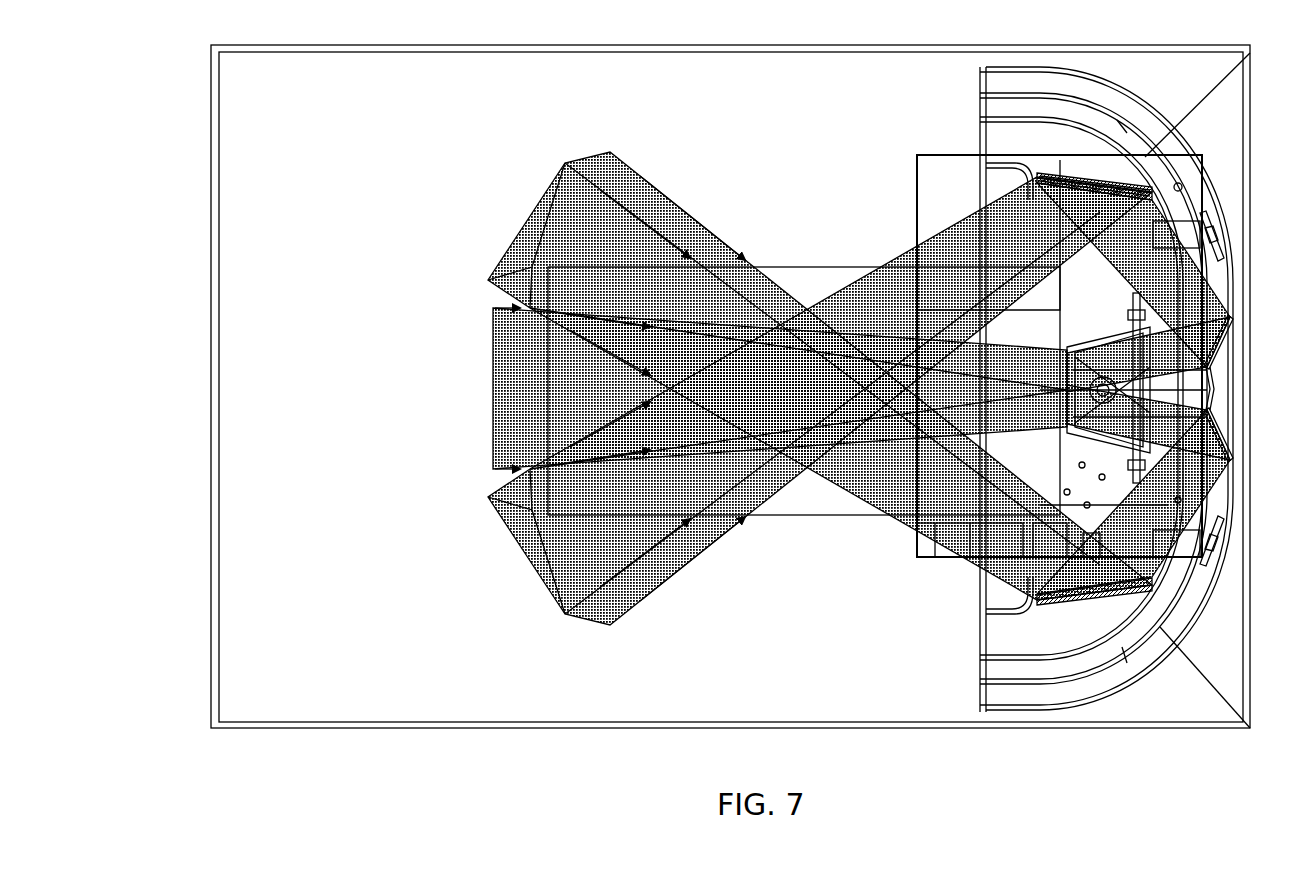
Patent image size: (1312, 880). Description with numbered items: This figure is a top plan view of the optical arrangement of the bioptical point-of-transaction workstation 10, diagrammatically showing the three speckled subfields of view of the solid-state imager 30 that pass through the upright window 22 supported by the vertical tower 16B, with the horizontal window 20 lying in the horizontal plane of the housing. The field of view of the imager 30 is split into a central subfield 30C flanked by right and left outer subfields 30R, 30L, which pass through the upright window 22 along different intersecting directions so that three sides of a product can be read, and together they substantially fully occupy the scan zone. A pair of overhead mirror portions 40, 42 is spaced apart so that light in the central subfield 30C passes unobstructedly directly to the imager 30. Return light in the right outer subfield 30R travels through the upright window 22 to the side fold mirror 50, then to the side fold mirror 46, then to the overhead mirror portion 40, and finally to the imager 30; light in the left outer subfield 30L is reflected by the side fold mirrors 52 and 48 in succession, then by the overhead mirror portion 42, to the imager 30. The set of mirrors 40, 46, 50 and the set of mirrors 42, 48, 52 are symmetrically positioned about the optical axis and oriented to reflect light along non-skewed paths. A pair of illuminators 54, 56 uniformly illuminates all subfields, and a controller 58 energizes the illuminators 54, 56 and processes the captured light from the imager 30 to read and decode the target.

The point-of-transaction workstation 10 is at (1215, 32).
The vertical tower 16B is at (1130, 115).
The horizontal window 20 is at (830, 272).
The upright window 22 is at (982, 640).
The solid-state imager 30 is at (1150, 590).
The right outer subfield 30R is at (694, 225).
The left outer subfield 30L is at (694, 552).
The central subfield 30C is at (492, 402).
The overhead mirror portion 40 is at (1222, 467).
The overhead mirror portion 42 is at (1045, 175).
The side fold mirror 46 is at (1222, 428).
The side fold mirror 48 is at (1225, 345).
The side fold mirror 50 is at (1077, 605).
The side fold mirror 52 is at (1105, 180).
The illuminator 54 is at (1222, 535).
The illuminator 56 is at (1222, 243).
The controller 58 is at (972, 183).